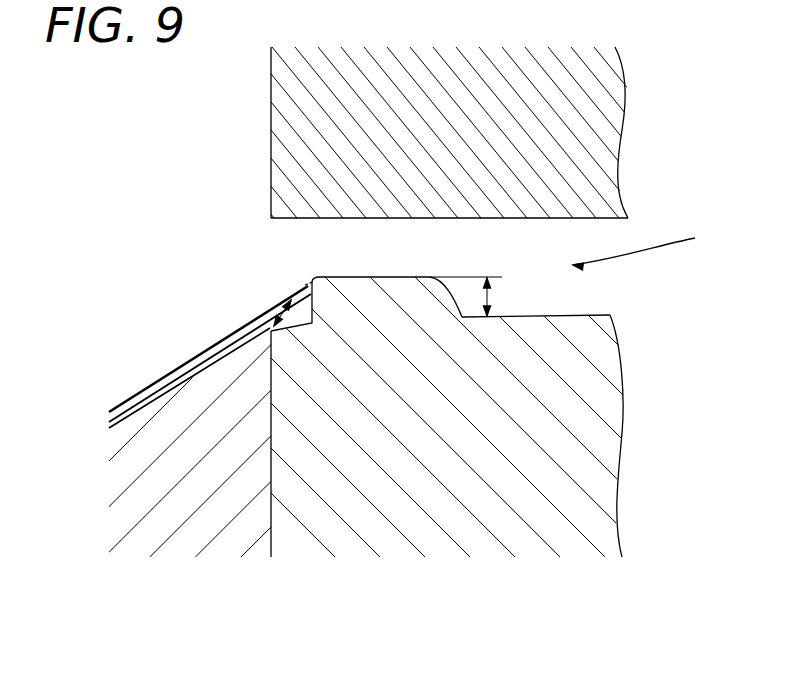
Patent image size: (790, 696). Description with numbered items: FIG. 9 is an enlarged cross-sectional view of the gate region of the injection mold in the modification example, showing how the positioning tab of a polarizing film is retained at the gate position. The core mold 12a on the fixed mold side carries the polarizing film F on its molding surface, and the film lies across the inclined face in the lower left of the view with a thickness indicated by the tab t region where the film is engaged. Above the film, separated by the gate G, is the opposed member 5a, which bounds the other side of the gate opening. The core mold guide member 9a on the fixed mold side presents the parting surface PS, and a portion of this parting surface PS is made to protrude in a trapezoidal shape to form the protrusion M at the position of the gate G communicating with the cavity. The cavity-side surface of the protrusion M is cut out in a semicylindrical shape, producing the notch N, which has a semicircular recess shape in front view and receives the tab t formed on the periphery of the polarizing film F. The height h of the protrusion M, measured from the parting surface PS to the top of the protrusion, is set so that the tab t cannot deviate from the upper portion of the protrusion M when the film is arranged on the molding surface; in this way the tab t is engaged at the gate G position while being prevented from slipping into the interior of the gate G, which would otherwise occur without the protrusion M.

The pressing member 5a is at (583, 123).
The core mold guide member 9a is at (585, 424).
The core mold 12a is at (187, 525).
The polarizing film F is at (210, 352).
The notch N is at (297, 293).
The gate G is at (645, 246).
The protrusion M is at (408, 298).
The parting surface PS is at (558, 314).
The tab t is at (290, 302).
The height of the protrusion h is at (470, 297).